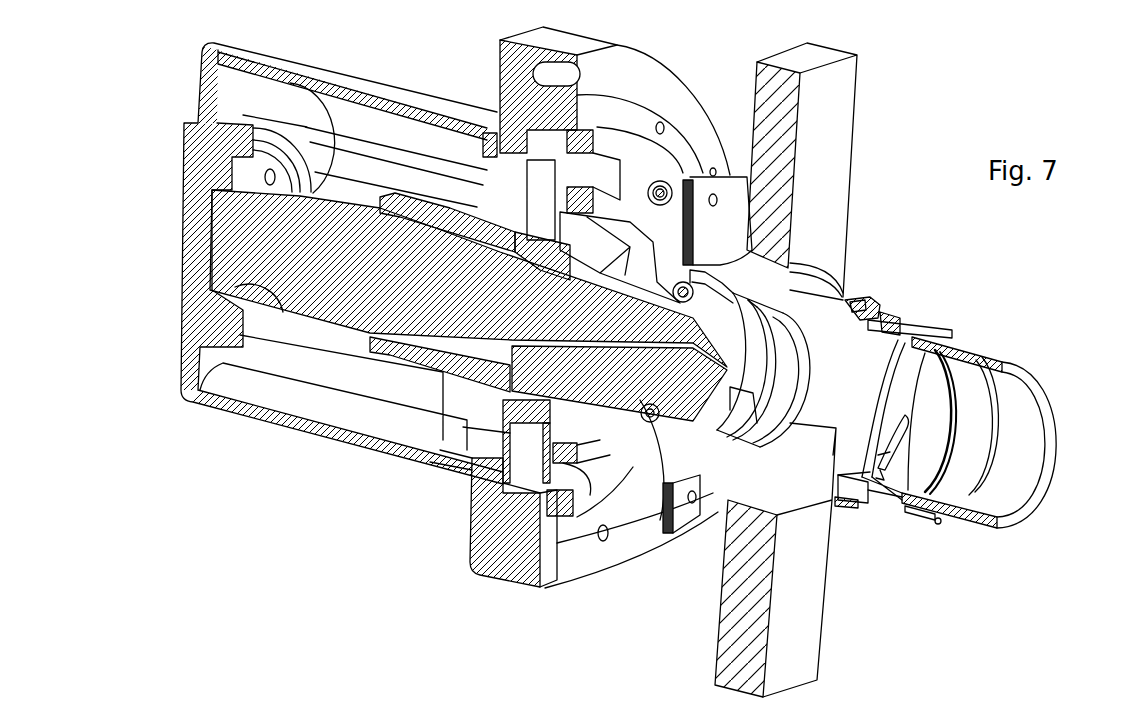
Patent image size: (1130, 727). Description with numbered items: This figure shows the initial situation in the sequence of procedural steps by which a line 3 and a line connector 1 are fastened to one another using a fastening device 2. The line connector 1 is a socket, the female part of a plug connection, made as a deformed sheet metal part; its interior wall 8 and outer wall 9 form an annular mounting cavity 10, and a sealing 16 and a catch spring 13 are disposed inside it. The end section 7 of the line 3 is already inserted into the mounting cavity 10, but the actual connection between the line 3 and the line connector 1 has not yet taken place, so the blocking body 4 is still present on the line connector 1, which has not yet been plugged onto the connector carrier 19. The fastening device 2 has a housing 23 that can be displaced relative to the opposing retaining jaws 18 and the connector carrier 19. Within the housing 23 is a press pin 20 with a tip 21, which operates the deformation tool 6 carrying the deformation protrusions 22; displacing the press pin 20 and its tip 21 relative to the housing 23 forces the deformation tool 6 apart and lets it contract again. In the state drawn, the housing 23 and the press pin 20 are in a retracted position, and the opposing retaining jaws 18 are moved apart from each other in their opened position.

The line connector 1 is at (930, 330).
The fastening device 2 is at (717, 67).
The line 3 is at (990, 355).
The blocking body 4 is at (853, 503).
The deformation tool 6 is at (630, 378).
The end section 7 is at (985, 487).
The interior wall 8 is at (985, 400).
The outer wall 9 is at (920, 517).
The mounting cavity 10 is at (940, 523).
The catch spring 13 is at (893, 503).
The sealing 16 is at (945, 415).
The opposing retaining jaws 18 is at (835, 118).
The connector carrier 19 is at (730, 445).
The press pin 20 is at (267, 248).
The tip 21 is at (472, 455).
The deformation protrusions 22 is at (680, 535).
The housing 23 is at (650, 72).